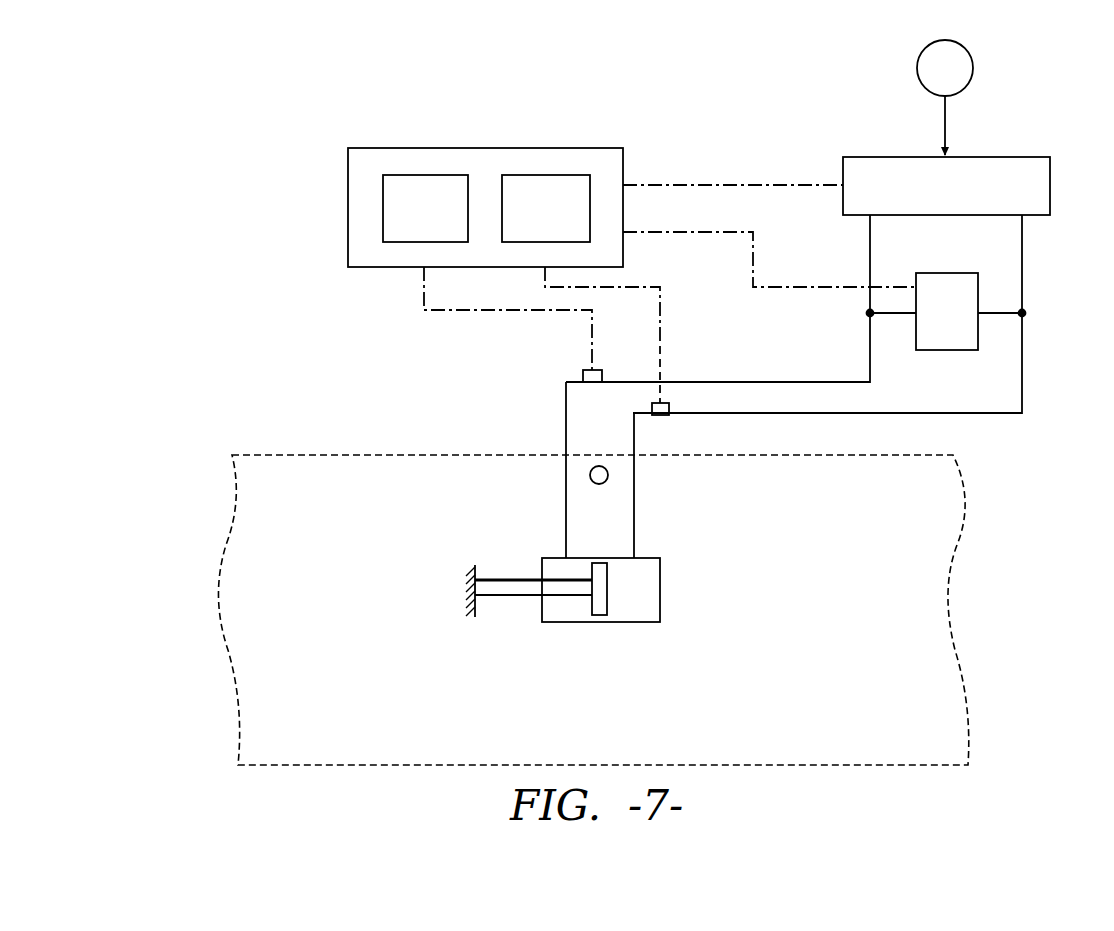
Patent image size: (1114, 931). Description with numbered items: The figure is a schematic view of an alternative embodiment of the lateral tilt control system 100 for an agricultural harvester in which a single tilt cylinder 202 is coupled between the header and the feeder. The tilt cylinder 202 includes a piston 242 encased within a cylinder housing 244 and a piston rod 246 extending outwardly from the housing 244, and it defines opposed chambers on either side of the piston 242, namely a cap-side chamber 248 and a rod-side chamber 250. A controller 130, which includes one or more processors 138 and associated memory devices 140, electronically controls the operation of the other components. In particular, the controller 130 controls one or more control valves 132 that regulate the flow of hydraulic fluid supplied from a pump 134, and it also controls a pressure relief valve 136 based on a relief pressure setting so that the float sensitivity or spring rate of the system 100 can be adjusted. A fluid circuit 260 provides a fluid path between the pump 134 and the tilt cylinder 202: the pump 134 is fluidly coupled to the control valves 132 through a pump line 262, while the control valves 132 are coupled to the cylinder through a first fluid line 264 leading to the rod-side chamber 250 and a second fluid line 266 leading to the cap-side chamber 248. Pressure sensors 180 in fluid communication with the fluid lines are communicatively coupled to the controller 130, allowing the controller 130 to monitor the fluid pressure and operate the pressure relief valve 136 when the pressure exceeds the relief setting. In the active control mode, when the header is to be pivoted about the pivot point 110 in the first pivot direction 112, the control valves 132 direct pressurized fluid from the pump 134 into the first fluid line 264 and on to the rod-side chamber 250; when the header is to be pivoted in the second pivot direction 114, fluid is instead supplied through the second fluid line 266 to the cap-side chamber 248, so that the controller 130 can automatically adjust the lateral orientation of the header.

The lateral tilt control system 100 is at (254, 249).
The pivot point 110 is at (600, 485).
The first pivot direction 112 is at (657, 480).
The second pivot direction 114 is at (542, 480).
The controller 130 is at (440, 146).
The control valve 132 is at (926, 200).
The pump 134 is at (973, 73).
The pressure relief valve 136 is at (927, 327).
The processor 138 is at (446, 223).
The memory device 140 is at (526, 223).
The pressure sensor 180 is at (582, 377).
The tilt cylinder 202 is at (599, 607).
The piston 242 is at (600, 608).
The cylinder housing 244 is at (661, 578).
The piston rod 246 is at (513, 589).
The cap-side chamber 248 is at (650, 596).
The rod-side chamber 250 is at (560, 613).
The fluid circuit 260 is at (748, 333).
The pump line 262 is at (950, 111).
The first fluid line 264 is at (840, 380).
The second fluid line 266 is at (1025, 365).